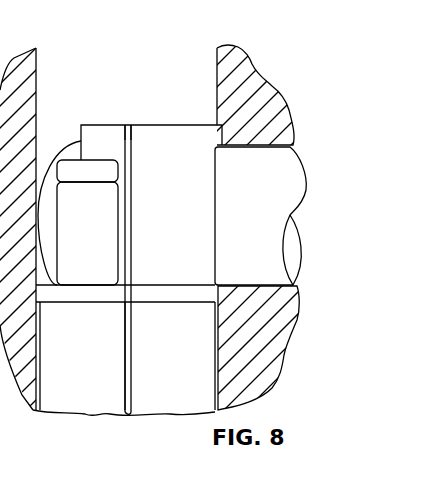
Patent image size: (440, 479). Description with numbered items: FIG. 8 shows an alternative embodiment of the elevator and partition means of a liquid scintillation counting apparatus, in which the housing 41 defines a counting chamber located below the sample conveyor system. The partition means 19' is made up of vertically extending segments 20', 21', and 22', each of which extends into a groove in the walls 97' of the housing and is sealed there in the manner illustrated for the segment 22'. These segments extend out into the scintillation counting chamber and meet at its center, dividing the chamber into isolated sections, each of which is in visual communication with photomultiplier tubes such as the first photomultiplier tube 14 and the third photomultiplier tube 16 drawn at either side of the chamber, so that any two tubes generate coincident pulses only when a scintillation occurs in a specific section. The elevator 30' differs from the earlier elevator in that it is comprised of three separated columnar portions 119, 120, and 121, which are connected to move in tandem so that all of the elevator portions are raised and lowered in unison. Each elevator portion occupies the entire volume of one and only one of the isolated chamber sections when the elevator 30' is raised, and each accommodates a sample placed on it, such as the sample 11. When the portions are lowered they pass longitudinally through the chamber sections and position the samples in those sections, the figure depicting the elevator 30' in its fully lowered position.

The walls of housing 97' is at (220, 239).
The housing 41 is at (267, 71).
The first photomultiplier tube 14 is at (62, 153).
The vertically extending segment 20' is at (149, 119).
The partition means 19' is at (139, 99).
The vertically extending segment 21' is at (157, 250).
The sample 11 is at (87, 222).
The vertically extending segment 22' is at (125, 252).
The third photomultiplier tube 16 is at (220, 239).
The columnar portion of elevator 119 is at (82, 356).
The columnar portion of elevator 120 is at (184, 356).
The columnar portion of elevator 121 is at (131, 413).
The elevator 30' is at (117, 432).